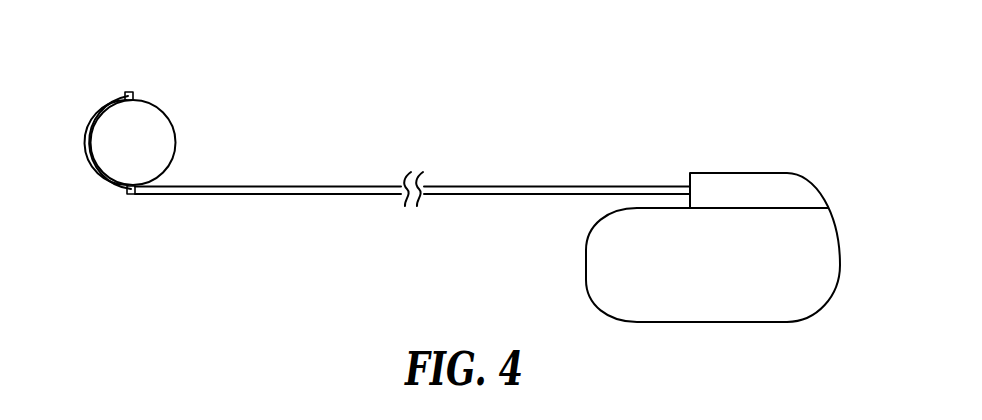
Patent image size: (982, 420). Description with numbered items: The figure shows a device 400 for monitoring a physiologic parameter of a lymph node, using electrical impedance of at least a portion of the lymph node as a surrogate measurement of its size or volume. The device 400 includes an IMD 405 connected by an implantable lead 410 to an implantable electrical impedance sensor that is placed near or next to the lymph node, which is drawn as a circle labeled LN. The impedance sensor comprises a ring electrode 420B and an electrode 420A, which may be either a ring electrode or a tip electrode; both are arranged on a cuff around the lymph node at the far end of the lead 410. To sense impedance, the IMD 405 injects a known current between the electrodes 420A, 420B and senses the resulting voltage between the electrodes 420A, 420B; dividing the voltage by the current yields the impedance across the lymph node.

The device 400 is at (747, 59).
The IMD 405 is at (843, 252).
The implantable lead 410 is at (552, 185).
The electrode 420A is at (127, 91).
The ring electrode 420B is at (131, 196).